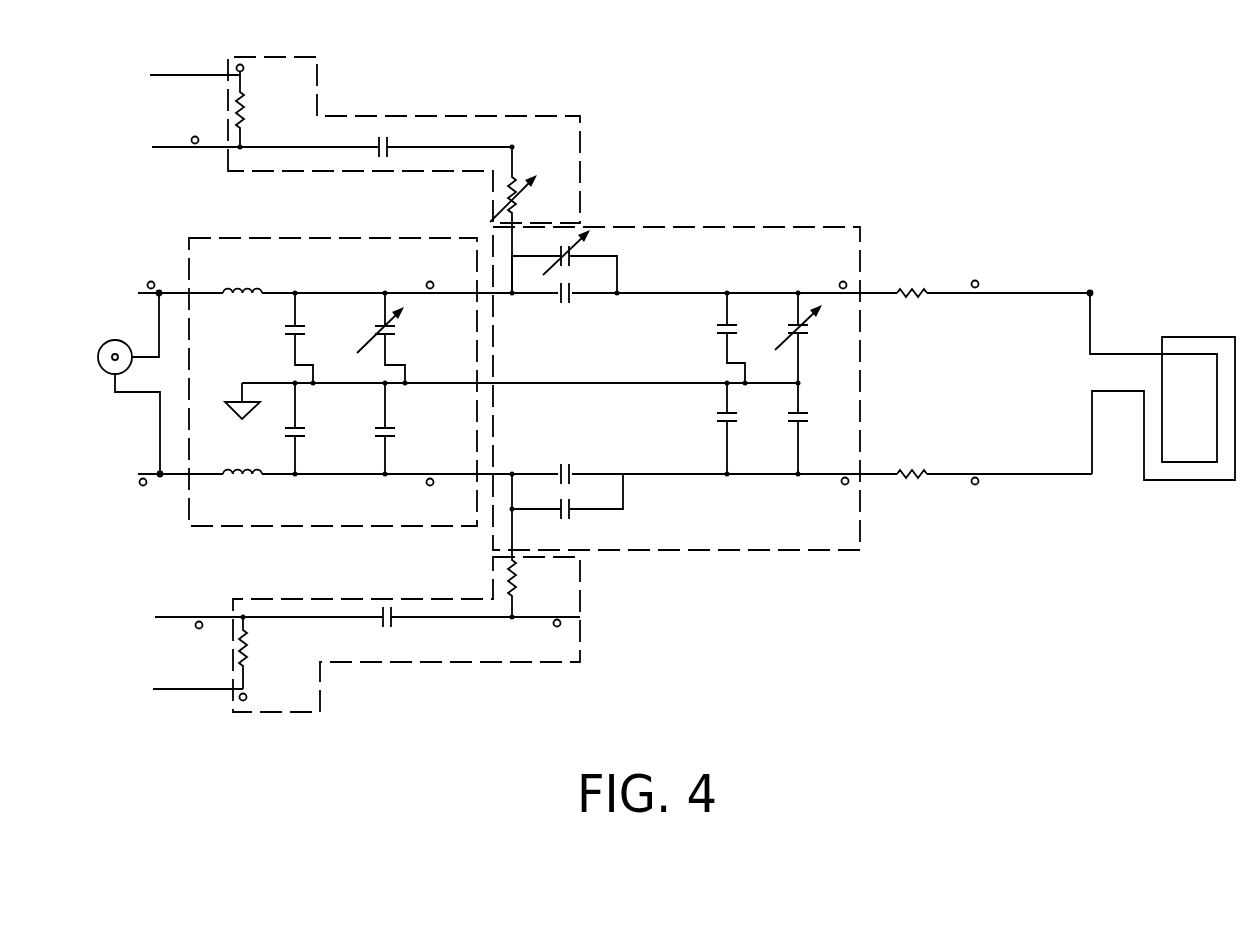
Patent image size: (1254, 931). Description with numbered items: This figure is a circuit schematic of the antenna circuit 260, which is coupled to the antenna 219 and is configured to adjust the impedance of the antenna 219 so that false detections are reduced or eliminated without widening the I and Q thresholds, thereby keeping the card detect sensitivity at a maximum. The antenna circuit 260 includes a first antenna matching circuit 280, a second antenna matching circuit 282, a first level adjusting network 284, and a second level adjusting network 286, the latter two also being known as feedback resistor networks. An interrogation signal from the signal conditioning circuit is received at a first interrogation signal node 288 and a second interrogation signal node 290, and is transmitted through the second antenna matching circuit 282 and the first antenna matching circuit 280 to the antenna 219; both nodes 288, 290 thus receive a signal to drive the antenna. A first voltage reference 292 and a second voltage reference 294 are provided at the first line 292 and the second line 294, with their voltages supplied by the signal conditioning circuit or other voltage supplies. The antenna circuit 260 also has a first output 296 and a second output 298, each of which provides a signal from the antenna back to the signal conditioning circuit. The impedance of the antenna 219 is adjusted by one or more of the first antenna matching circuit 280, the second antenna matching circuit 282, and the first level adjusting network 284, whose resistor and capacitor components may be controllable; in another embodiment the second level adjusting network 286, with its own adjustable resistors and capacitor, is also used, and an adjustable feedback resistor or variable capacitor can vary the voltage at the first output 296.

The antenna circuit 260 is at (848, 110).
The first antenna matching circuit 280 is at (778, 550).
The second antenna matching circuit 282 is at (275, 540).
The first level adjusting network 284 is at (548, 116).
The second level adjusting network 286 is at (527, 665).
The first interrogation signal node 288 is at (150, 283).
The second interrogation signal node 290 is at (152, 488).
The first voltage reference 292 is at (217, 150).
The second voltage reference 294 is at (175, 615).
The first output 296 is at (172, 73).
The second output 298 is at (172, 692).
The antenna 219 is at (1187, 480).